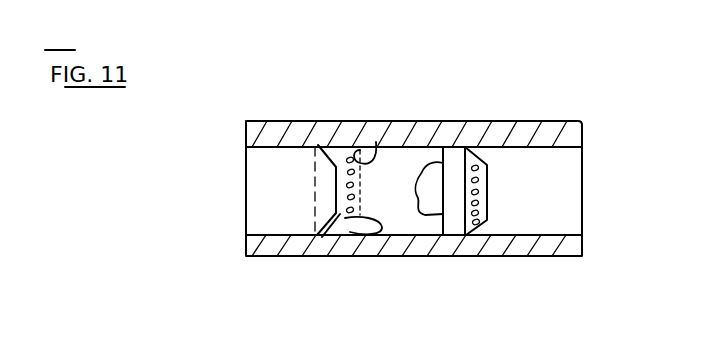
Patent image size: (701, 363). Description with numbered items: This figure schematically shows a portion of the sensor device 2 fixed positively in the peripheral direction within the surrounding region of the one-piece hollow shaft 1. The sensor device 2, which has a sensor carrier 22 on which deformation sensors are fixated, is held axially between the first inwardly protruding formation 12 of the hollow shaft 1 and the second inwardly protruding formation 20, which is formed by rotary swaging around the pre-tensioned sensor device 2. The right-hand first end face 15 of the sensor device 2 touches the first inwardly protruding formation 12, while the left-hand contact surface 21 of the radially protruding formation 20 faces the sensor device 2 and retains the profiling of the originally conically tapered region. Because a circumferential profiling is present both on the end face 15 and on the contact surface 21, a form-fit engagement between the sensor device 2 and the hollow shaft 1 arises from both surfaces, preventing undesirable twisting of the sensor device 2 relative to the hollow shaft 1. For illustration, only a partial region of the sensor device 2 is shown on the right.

The hollow shaft 1 is at (528, 103).
The sensor device 2 is at (437, 141).
The first inwardly protruding formation 12 is at (487, 138).
The first end face 15 is at (489, 189).
The second inwardly protruding formation 20 is at (344, 141).
The contact surface 21 is at (376, 142).
The sensor carrier 22 is at (436, 202).